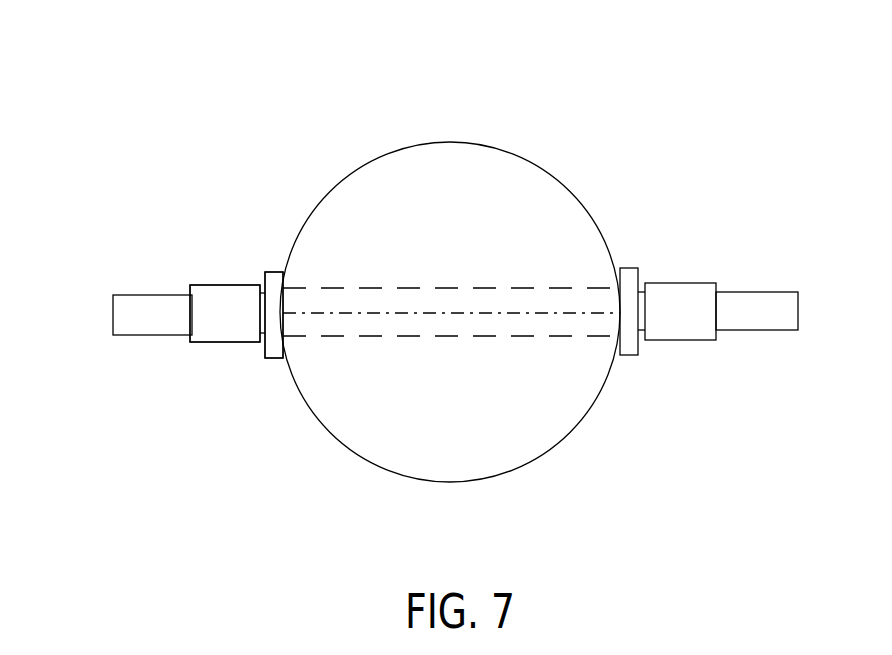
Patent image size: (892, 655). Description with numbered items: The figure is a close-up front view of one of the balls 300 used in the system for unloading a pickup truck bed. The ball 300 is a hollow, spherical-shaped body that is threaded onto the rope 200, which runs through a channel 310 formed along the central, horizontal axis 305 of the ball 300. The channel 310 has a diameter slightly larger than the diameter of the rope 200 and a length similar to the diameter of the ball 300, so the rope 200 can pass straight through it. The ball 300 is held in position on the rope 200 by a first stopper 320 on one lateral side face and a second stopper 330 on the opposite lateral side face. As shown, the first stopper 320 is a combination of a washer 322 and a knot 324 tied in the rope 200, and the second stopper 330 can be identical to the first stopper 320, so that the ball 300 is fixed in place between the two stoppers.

The rope 200 is at (132, 283).
The ball 300 is at (468, 126).
The central horizontal axis 305 is at (463, 313).
The channel 310 is at (340, 288).
The first stopper 320 is at (249, 224).
The washer 322 is at (273, 371).
The knot 324 is at (222, 352).
The second stopper 330 is at (682, 238).